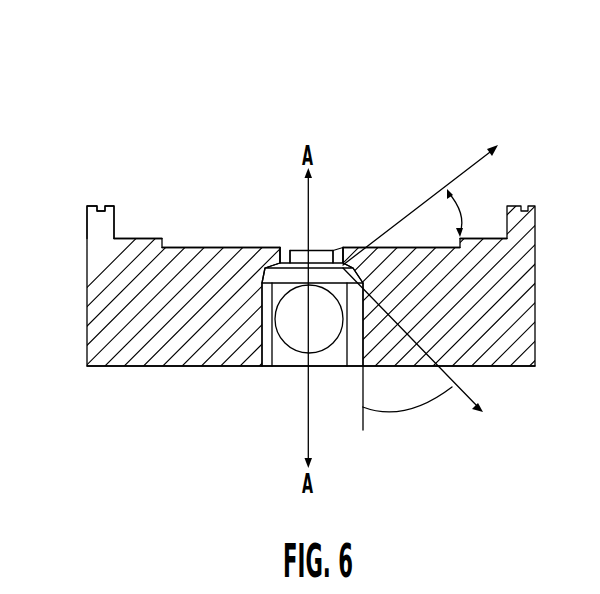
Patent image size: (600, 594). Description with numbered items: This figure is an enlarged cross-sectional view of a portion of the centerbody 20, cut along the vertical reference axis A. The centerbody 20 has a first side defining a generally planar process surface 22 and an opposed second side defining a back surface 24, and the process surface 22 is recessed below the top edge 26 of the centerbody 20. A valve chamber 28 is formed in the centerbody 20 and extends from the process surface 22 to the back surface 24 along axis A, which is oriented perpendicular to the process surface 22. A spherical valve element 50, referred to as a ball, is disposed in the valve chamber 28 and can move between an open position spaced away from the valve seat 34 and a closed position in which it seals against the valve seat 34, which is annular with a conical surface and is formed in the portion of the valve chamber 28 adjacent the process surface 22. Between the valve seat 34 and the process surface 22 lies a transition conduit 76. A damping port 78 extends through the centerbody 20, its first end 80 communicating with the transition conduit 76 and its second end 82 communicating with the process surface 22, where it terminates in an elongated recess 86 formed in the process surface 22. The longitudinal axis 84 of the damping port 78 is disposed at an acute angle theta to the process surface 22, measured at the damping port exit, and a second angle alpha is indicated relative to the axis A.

The centerbody 20 is at (498, 340).
The process surface 22 is at (145, 238).
The back surface 24 is at (178, 368).
The top edge 26 is at (92, 206).
The valve chamber 28 is at (290, 362).
The valve seat 34 is at (268, 268).
The valve element 50 is at (337, 333).
The transition conduit 76 is at (288, 263).
The damping port 78 is at (283, 262).
The first end 80 is at (339, 246).
The second end 82 is at (347, 262).
The longitudinal axis 84 is at (470, 167).
The elongated recess 86 is at (205, 247).